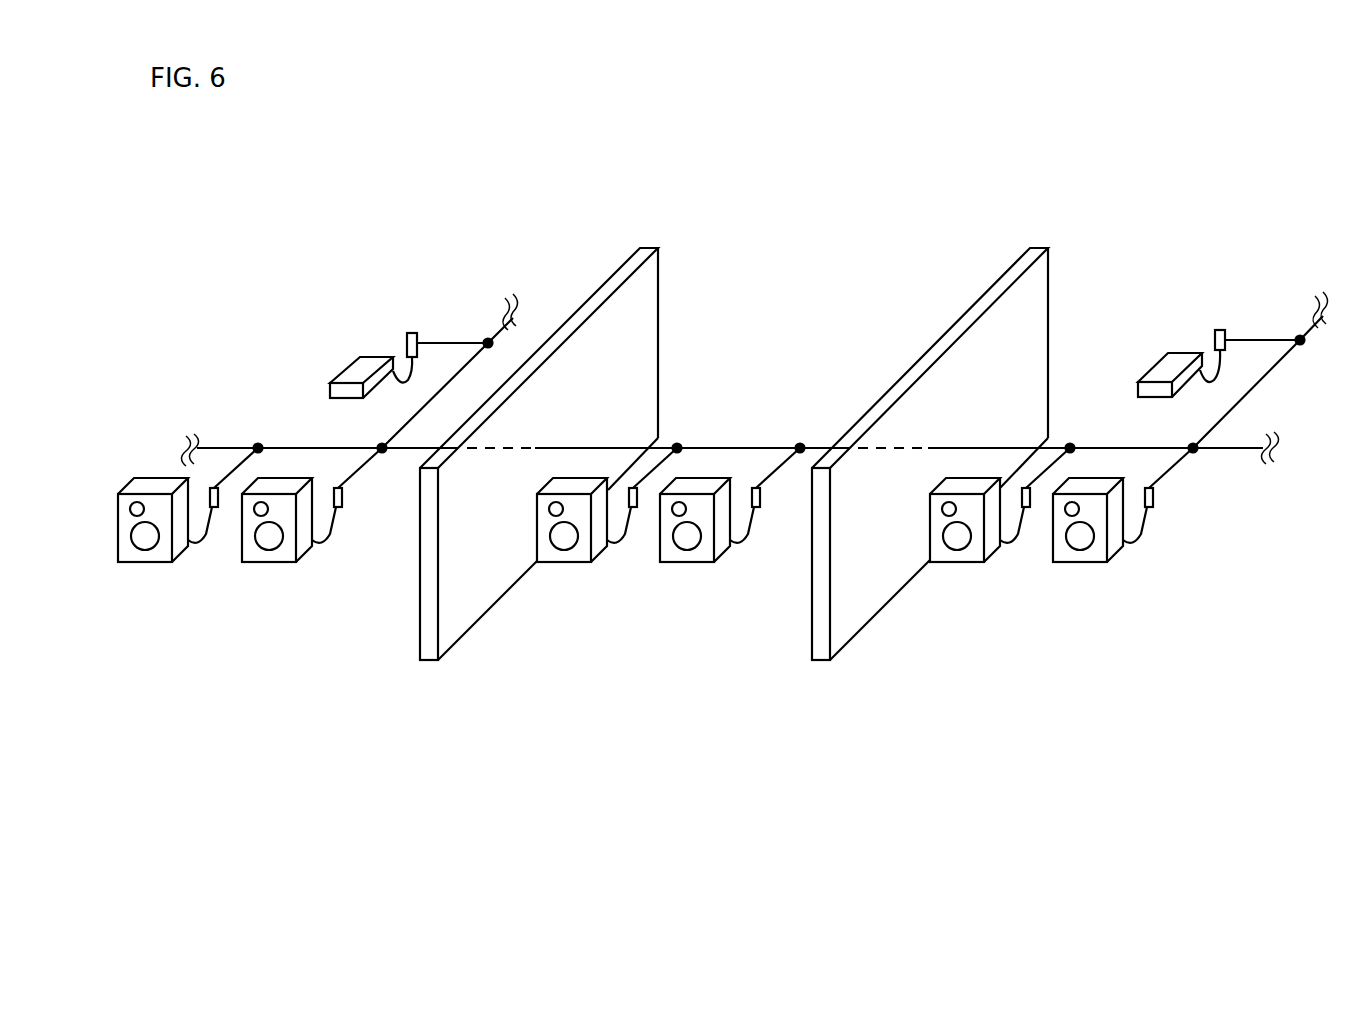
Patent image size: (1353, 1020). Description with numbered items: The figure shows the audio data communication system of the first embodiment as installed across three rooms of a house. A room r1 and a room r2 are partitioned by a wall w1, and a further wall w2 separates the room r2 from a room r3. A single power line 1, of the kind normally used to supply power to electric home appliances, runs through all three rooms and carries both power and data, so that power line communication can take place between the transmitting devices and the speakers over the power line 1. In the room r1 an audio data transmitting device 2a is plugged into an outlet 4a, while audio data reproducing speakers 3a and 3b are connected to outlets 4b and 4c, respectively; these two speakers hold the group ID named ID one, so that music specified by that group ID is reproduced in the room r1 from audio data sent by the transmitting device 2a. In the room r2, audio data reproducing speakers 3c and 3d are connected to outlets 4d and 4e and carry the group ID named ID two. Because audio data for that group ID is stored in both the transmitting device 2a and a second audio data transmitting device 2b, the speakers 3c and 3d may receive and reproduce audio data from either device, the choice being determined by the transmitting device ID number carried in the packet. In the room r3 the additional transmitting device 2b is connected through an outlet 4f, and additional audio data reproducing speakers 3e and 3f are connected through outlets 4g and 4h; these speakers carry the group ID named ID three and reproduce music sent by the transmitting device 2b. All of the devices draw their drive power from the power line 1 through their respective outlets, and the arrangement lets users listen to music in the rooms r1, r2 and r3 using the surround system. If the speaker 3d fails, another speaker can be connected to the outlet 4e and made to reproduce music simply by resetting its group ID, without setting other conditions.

The power line 1 is at (739, 446).
The audio data transmitting device 2a is at (362, 372).
The audio data transmitting device 2b is at (1170, 370).
The audio data reproducing speaker 3a is at (148, 562).
The audio data reproducing speaker 3b is at (272, 562).
The audio data reproducing speaker 3c is at (567, 562).
The audio data reproducing speaker 3d is at (690, 562).
The audio data reproducing speaker 3e is at (960, 562).
The audio data reproducing speaker 3f is at (1083, 562).
The outlet 4a is at (412, 333).
The outlet 4b is at (218, 510).
The outlet 4c is at (342, 510).
The outlet 4d is at (637, 510).
The outlet 4e is at (760, 510).
The outlet 4f is at (1222, 330).
The outlet 4g is at (1030, 510).
The outlet 4h is at (1153, 510).
The room r1 is at (303, 248).
The room r2 is at (809, 248).
The room r3 is at (1201, 248).
The wall w1 is at (647, 336).
The wall w2 is at (1040, 283).